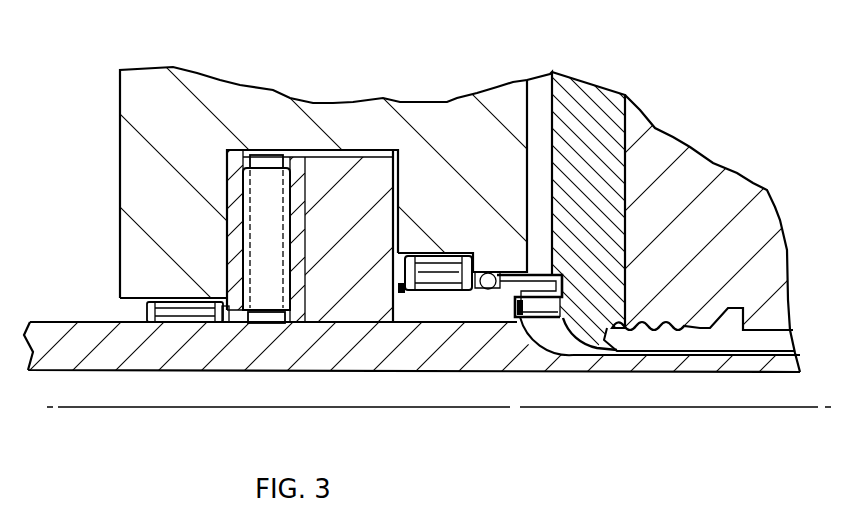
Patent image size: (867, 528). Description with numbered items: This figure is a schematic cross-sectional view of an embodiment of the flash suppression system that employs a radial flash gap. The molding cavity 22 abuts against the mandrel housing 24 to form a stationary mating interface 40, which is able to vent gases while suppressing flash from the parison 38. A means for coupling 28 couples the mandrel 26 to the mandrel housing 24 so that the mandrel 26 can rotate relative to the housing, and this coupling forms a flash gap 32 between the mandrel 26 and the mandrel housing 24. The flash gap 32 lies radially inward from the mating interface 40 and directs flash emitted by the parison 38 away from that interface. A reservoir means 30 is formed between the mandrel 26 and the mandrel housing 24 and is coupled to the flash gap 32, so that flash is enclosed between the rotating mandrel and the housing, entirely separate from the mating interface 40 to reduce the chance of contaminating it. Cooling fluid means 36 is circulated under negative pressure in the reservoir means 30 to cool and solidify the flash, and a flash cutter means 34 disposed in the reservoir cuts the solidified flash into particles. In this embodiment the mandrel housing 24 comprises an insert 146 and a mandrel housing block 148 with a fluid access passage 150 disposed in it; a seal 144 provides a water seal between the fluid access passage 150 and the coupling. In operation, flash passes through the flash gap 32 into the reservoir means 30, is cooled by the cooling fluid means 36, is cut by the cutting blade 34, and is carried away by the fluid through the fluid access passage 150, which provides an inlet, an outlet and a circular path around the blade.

The molding cavity 22 is at (645, 105).
The mandrel housing 24 is at (347, 92).
The mandrel 26 is at (695, 363).
The means for coupling 28 is at (247, 337).
The reservoir means 30 is at (545, 333).
The flash gap 32 is at (620, 345).
The flash cutter means 34 is at (530, 265).
The cooling fluid means 36 is at (568, 340).
The parison 38 is at (740, 343).
The stationary mating interface 40 is at (622, 217).
The seal 144 is at (487, 271).
The insert 146 is at (613, 262).
The mandrel housing block 148 is at (457, 98).
The fluid access passage 150 is at (535, 90).